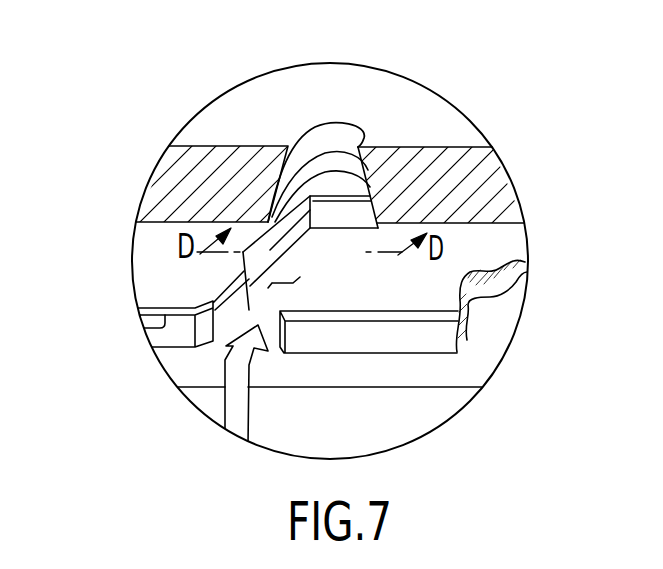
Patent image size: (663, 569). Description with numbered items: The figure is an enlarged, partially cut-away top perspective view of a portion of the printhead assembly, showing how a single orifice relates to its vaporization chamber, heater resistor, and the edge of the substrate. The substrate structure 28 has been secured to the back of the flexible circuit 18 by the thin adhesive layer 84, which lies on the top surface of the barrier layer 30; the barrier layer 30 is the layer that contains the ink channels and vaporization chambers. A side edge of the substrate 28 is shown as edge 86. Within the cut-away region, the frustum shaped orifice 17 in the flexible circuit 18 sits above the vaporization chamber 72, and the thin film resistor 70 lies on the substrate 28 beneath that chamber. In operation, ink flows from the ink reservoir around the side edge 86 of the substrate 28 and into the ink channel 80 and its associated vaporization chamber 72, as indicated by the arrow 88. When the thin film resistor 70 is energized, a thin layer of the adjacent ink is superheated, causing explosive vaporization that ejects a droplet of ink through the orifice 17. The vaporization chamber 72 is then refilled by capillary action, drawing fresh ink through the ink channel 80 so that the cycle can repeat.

The flexible circuit 18 is at (223, 128).
The frustum shaped orifice 17 is at (322, 170).
The vaporization chamber 72 is at (348, 213).
The thin film resistor 70 is at (300, 270).
The ink channel 80 is at (268, 292).
The thin adhesive layer 84 is at (146, 327).
The arrow 88 is at (225, 372).
The substrate structure 28 is at (458, 378).
The barrier layer 30 is at (350, 333).
The side edge 86 is at (435, 428).